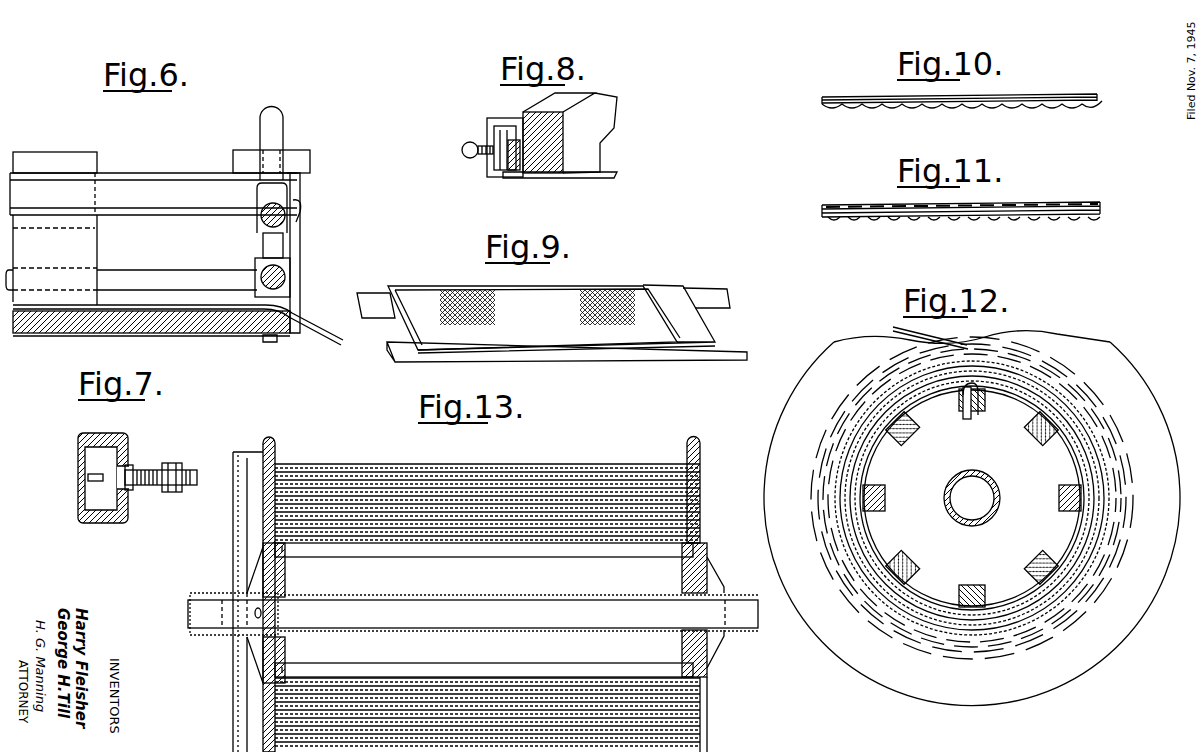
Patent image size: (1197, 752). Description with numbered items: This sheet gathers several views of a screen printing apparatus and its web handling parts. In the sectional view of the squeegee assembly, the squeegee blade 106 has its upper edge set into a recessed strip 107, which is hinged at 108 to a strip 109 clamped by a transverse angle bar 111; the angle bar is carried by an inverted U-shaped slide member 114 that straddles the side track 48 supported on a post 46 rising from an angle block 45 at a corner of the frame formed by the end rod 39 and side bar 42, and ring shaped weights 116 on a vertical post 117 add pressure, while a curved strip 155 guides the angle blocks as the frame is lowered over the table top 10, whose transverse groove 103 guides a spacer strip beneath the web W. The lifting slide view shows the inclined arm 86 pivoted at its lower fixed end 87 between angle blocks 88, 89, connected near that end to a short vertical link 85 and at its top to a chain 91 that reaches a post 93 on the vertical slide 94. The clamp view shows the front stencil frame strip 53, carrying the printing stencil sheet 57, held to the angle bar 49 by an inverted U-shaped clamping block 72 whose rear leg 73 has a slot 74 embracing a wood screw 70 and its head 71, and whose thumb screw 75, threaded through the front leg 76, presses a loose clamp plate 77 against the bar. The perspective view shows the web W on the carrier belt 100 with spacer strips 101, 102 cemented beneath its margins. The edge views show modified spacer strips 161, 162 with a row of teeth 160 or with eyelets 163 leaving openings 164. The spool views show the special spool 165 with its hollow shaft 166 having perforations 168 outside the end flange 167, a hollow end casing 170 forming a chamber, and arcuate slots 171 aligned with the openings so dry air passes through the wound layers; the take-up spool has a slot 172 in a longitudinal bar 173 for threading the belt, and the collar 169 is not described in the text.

In FIG. 6, the flat table top 10 is at (248, 334).
In FIG. 6, the front end rod 39 is at (235, 258).
In FIG. 6, the side bar 42 is at (290, 273).
In FIG. 6, the angle block 45 is at (290, 286).
In FIG. 6, the vertically disposed post 46 is at (262, 245).
In FIG. 6, the side track 48 is at (303, 210).
In FIG. 8, the angle bar 49 is at (505, 165).
In FIG. 8, the front stencil frame strip 53 is at (590, 115).
In FIG. 8, the printing stencil sheet 57 is at (610, 175).
In FIG. 8, the wood screw 70 is at (555, 178).
In FIG. 8, the screw head 71 is at (515, 180).
In FIG. 8, the inverted U-shaped clamping block 72 is at (500, 118).
In FIG. 8, the rear leg 73 is at (505, 178).
In FIG. 8, the slot 74 is at (537, 180).
In FIG. 8, the thumb screw 75 is at (462, 148).
In FIG. 8, the front leg 76 is at (487, 163).
In FIG. 8, the loose clamp plate 77 is at (497, 166).
In FIG. 7, the short vertical link 85 is at (182, 491).
In FIG. 7, the inclined arm 86 is at (190, 468).
In FIG. 7, the lower fixed end 87 is at (147, 478).
In FIG. 7, the angle block 88 is at (133, 486).
In FIG. 7, the angle block 89 is at (132, 468).
In FIG. 7, the chain 91 is at (88, 476).
In FIG. 7, the post 93 is at (100, 488).
In FIG. 7, the vertical slide 94 is at (78, 450).
In FIG. 6, the carrier belt 100 is at (335, 342).
In FIG. 13, the carrier belt 100 is at (568, 466).
In FIG. 9, the carrier belt 100 is at (690, 320).
In FIG. 10, the carrier belt 100 is at (1074, 96).
In FIG. 11, the carrier belt 100 is at (1080, 204).
In FIG. 12, the carrier belt 100 is at (893, 328).
In FIG. 6, the spacer strip 101 is at (313, 337).
In FIG. 9, the spacer strip 101 is at (745, 352).
In FIG. 9, the spacer strip 102 is at (720, 300).
In FIG. 6, the transverse groove 103 is at (250, 345).
In FIG. 6, the squeegee blade 106 is at (53, 297).
In FIG. 6, the recessed strip 107 is at (131, 264).
In FIG. 6, the hinge 108 is at (43, 222).
In FIG. 6, the strip 109 is at (80, 162).
In FIG. 6, the transverse angle bar 111 is at (147, 190).
In FIG. 6, the horizontal slide member 114 is at (292, 187).
In FIG. 6, the ring shaped weight 116 is at (300, 160).
In FIG. 6, the vertical post 117 is at (272, 132).
In FIG. 6, the curved strip 155 is at (305, 197).
In FIG. 10, the teeth 160 is at (888, 108).
In FIG. 13, the spacer strip 161 is at (282, 470).
In FIG. 10, the spacer strip 161 is at (947, 108).
In FIG. 13, the spacer strip 162 is at (680, 462).
In FIG. 11, the eyelet 163 is at (882, 219).
In FIG. 13, the opening 164 is at (462, 466).
In FIG. 10, the opening 164 is at (1042, 108).
In FIG. 11, the opening 164 is at (975, 219).
In FIG. 12, the opening 164 is at (1066, 456).
In FIG. 13, the spool 165 is at (272, 440).
In FIG. 13, the hollow shaft 166 is at (207, 598).
In FIG. 12, the hollow shaft 166 is at (968, 527).
In FIG. 13, the end flange 167 is at (290, 575).
In FIG. 13, the perforation 168 is at (286, 614).
In FIG. 13, the shaft collar 169 is at (220, 617).
In FIG. 13, the hollow end casing 170 is at (233, 553).
In FIG. 13, the arcuate slot 171 is at (275, 722).
In FIG. 12, the arcuate slot 171 is at (822, 456).
In FIG. 12, the slot 172 is at (962, 410).
In FIG. 12, the longitudinal bar 173 is at (987, 415).
In FIG. 6, the web W is at (297, 330).
In FIG. 13, the web W is at (540, 466).
In FIG. 9, the web W is at (638, 292).
In FIG. 10, the web W is at (1027, 96).
In FIG. 11, the web W is at (1038, 204).
In FIG. 12, the web W is at (960, 340).